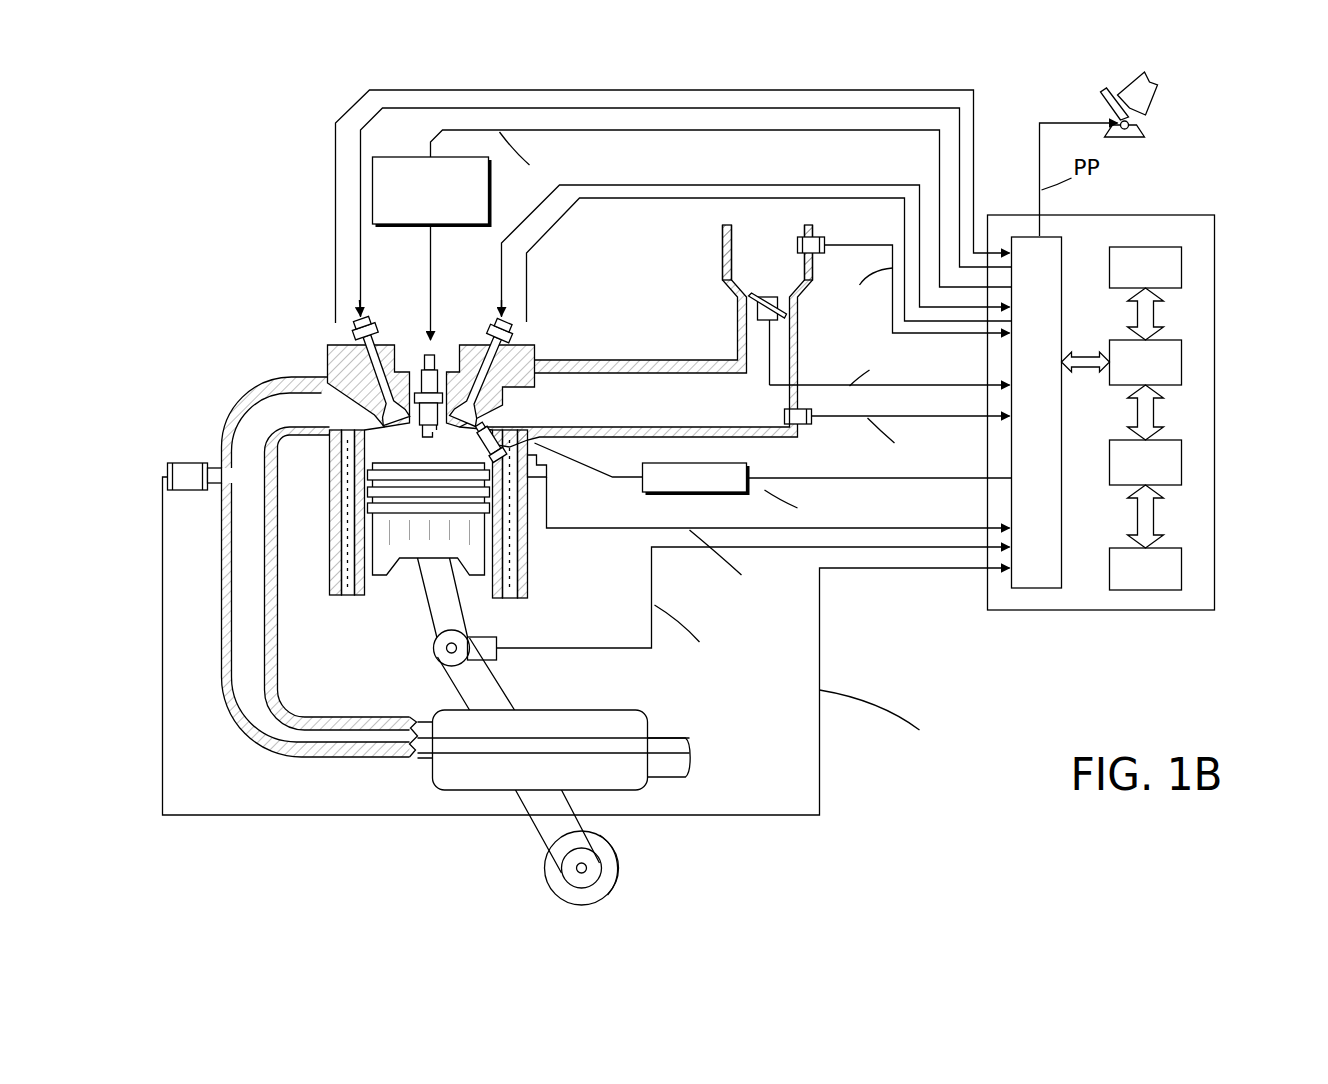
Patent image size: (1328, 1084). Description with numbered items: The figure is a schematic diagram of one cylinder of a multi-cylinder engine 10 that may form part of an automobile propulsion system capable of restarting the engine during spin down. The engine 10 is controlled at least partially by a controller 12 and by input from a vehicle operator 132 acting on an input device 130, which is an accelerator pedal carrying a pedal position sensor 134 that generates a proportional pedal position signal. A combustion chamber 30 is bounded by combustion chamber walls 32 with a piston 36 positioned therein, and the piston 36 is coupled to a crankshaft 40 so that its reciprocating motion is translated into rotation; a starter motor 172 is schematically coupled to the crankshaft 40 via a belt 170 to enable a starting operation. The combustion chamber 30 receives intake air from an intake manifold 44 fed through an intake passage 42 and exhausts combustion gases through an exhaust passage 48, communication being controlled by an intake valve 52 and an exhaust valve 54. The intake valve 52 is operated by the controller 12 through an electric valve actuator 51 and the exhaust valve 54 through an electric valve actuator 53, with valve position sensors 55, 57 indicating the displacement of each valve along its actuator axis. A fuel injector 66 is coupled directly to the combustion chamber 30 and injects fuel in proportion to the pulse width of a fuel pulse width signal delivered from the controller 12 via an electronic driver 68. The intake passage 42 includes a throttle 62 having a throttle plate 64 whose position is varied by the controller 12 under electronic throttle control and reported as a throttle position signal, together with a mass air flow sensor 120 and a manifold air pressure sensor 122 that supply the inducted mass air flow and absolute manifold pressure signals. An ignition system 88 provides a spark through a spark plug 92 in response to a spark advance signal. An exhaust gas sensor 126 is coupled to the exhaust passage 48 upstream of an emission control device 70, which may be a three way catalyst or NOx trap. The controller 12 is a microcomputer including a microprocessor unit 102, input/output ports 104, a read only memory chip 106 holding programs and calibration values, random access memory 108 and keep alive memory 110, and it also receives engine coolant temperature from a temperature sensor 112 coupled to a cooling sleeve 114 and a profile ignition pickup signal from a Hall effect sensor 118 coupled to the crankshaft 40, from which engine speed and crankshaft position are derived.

The engine 10 is at (262, 298).
The controller 12 is at (1203, 215).
The combustion chamber 30 is at (428, 443).
The combustion chamber walls 32 is at (375, 580).
The piston 36 is at (413, 545).
The crankshaft 40 is at (437, 662).
The intake passage 42 is at (768, 252).
The intake manifold 44 is at (648, 336).
The exhaust passage 48 is at (320, 567).
The electric valve actuator 51 is at (483, 300).
The intake valve 52 is at (465, 412).
The electric valve actuator 53 is at (375, 300).
The exhaust valve 54 is at (385, 418).
The valve position sensor 55 is at (533, 312).
The valve position sensor 57 is at (352, 345).
The throttle 62 is at (792, 303).
The throttle plate 64 is at (757, 306).
The fuel injector 66 is at (535, 445).
The electronic driver 68 is at (668, 492).
The emission control device 70 is at (622, 713).
The ignition system 88 is at (392, 157).
The spark plug 92 is at (437, 352).
The microprocessor unit 102 is at (1182, 362).
The input/output ports 104 is at (1064, 247).
The read only memory chip 106 is at (1182, 265).
The random access memory 108 is at (1182, 462).
The keep alive memory 110 is at (1182, 568).
The temperature sensor 112 is at (545, 478).
The cooling sleeve 114 is at (515, 556).
The Hall effect sensor 118 is at (500, 655).
The mass air flow sensor 120 is at (822, 243).
The manifold air pressure sensor 122 is at (812, 420).
The exhaust gas sensor 126 is at (165, 468).
The input device 130 is at (1103, 100).
The vehicle operator 132 is at (1160, 82).
The pedal position sensor 134 is at (1145, 128).
The belt 170 is at (530, 828).
The starter motor 172 is at (625, 885).